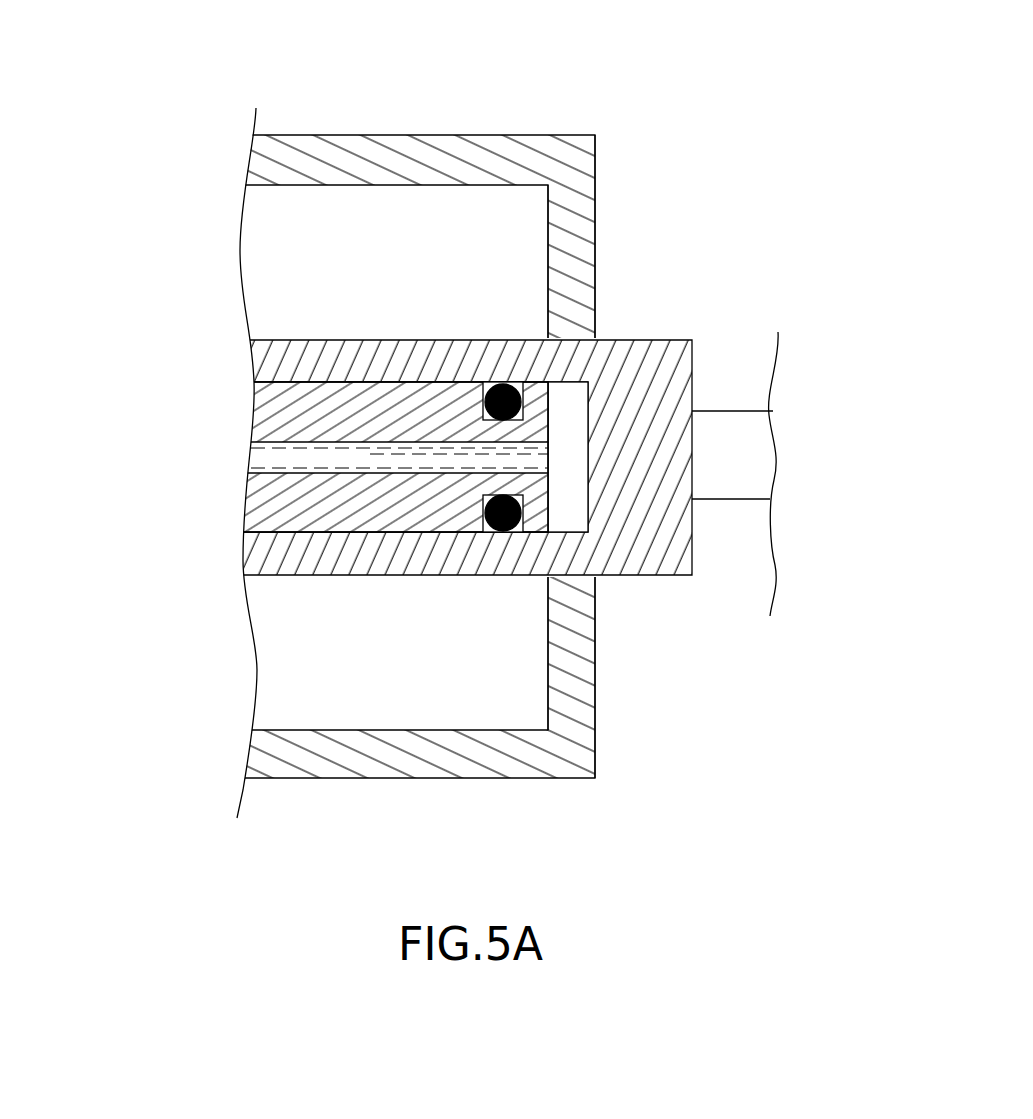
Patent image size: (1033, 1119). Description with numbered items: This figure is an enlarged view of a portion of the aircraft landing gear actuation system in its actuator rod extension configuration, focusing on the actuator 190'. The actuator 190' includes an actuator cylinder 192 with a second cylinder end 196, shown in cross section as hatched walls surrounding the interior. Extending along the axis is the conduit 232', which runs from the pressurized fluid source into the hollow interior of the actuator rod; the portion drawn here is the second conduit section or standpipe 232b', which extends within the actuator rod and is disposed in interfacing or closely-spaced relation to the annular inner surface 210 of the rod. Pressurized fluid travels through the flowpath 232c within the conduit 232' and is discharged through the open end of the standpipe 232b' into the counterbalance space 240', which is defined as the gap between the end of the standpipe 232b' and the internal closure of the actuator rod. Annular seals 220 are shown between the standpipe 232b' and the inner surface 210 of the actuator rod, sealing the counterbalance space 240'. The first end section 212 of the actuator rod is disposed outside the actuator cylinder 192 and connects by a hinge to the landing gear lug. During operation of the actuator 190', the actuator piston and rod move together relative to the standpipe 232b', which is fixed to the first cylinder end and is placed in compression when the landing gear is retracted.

The actuator 190' is at (757, 56).
The first end section 212 is at (727, 358).
The annular inner surface 210 is at (345, 393).
The seal 220 is at (503, 383).
The conduit 232' is at (314, 457).
The flowpath 232c is at (281, 458).
The standpipe 232b' is at (336, 505).
The counterbalance space 240' is at (597, 509).
The second cylinder end 196 is at (597, 715).
The actuator cylinder 192 is at (388, 779).